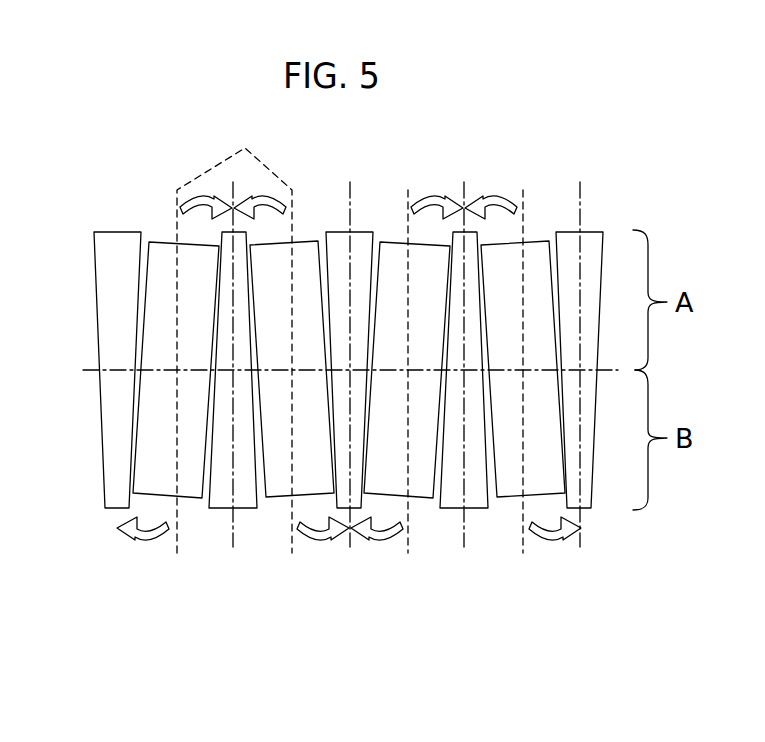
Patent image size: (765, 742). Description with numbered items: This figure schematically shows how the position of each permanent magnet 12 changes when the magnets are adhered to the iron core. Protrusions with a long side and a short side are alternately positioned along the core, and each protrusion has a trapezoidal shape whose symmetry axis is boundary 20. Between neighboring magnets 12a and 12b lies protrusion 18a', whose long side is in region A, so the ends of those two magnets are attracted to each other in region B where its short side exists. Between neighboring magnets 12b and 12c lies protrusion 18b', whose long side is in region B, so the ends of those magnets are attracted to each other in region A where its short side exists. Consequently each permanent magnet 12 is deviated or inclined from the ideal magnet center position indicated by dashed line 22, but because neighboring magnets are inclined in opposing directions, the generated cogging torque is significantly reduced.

The permanent magnet 12 is at (349, 467).
The permanent magnet 12a is at (275, 485).
The permanent magnet 12b is at (423, 483).
The permanent magnet 12c is at (515, 437).
The protrusion 18a' is at (355, 340).
The protrusion 18b' is at (222, 392).
The boundary 20 is at (580, 198).
The dashed line 22 is at (234, 334).